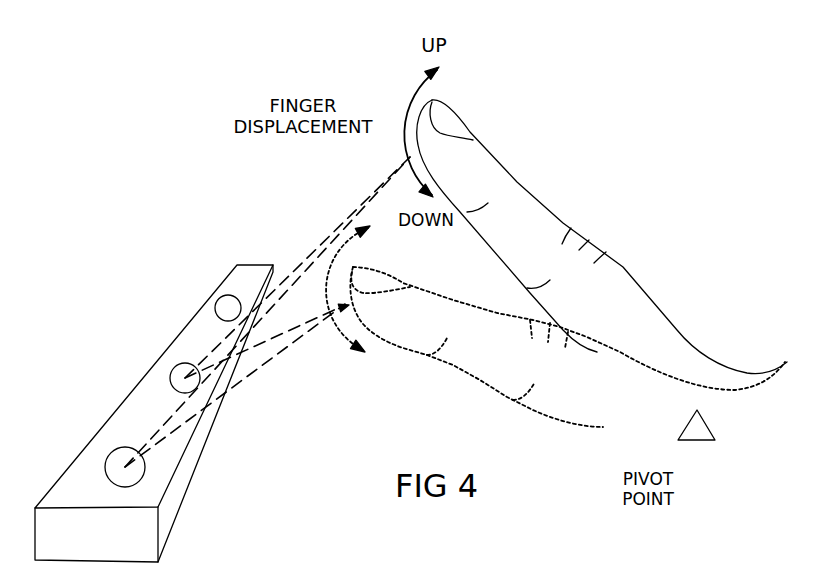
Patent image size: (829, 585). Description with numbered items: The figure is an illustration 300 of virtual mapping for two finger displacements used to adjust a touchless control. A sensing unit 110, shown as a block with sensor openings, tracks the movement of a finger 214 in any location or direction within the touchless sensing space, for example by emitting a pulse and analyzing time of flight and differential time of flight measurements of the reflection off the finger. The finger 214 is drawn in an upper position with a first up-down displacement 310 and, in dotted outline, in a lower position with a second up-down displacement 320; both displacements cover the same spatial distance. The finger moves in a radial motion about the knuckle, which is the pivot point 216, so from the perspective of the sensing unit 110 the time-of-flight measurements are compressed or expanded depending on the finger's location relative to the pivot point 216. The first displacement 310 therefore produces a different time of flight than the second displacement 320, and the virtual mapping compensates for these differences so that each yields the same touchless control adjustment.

The sensing unit 110 is at (190, 490).
The finger 214 is at (620, 262).
The pivot point 216 is at (715, 440).
The finger displacement illustration 300 is at (693, 133).
The first up-down displacement 310 is at (405, 108).
The second up-down displacement 320 is at (360, 350).